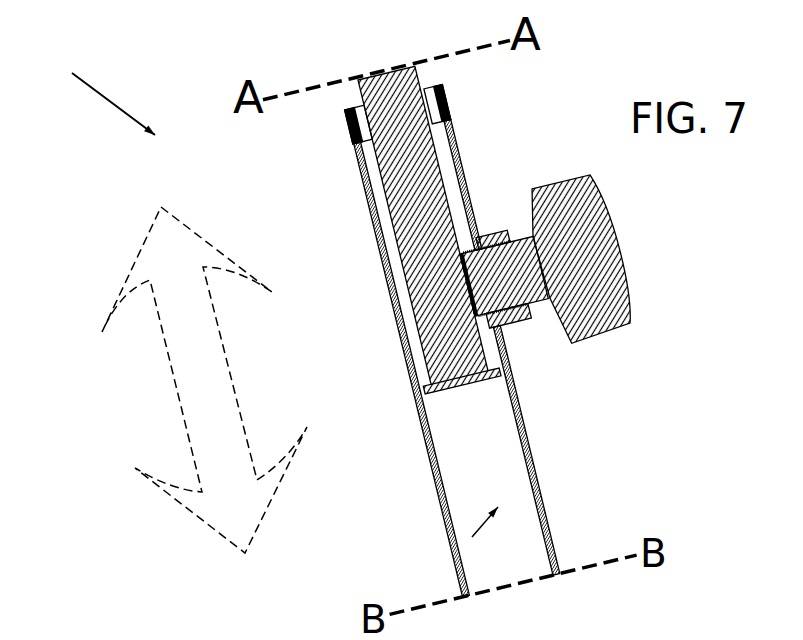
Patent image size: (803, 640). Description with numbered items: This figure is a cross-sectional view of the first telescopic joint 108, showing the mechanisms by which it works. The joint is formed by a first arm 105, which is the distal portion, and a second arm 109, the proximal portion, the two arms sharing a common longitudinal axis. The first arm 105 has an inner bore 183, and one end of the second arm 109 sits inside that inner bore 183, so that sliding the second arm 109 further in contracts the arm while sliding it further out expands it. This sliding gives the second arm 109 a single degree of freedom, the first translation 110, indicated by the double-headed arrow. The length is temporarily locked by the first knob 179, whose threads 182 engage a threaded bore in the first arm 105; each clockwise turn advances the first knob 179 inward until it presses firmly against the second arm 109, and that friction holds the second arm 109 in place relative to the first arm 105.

The first arm 105 is at (537, 448).
The first telescopic joint 108 is at (97, 93).
The second arm 109 is at (395, 257).
The first translation 110 is at (175, 380).
The first knob 179 is at (595, 340).
The threads 182 is at (462, 250).
The inner bore 183 is at (472, 537).